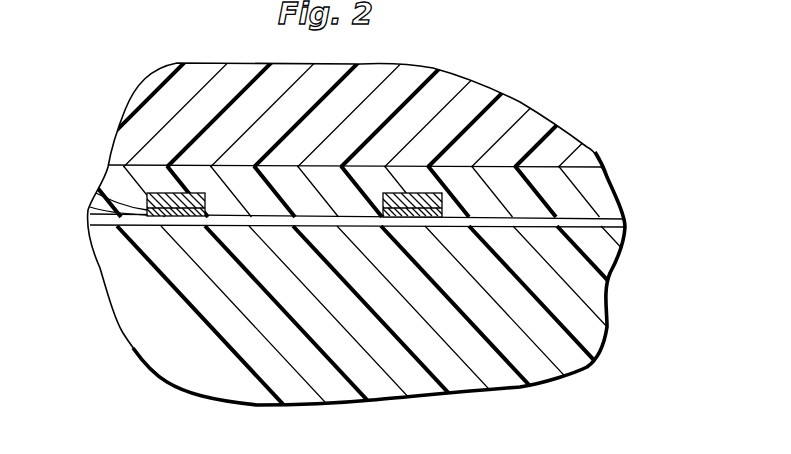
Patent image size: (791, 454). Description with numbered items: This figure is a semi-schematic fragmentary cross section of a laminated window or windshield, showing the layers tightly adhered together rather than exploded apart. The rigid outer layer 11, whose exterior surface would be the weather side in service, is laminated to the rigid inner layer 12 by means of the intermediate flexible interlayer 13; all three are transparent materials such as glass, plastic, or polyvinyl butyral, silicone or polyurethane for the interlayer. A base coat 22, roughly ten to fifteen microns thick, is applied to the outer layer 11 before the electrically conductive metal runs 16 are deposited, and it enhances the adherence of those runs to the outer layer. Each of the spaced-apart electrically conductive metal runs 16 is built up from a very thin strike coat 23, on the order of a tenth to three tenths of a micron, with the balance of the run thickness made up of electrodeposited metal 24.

The rigid outer layer 11 is at (608, 297).
The rigid inner layer 12 is at (512, 101).
The intermediate flexible interlayer 13 is at (596, 192).
The electrically conductive metal runs 16 is at (175, 193).
The base coat 22 is at (628, 219).
The strike coat 23 is at (93, 209).
The electrodeposited metal 24 is at (96, 193).